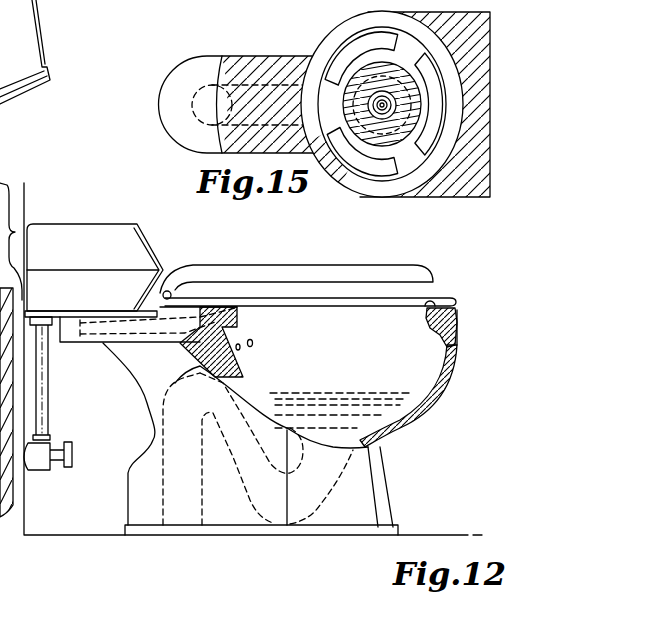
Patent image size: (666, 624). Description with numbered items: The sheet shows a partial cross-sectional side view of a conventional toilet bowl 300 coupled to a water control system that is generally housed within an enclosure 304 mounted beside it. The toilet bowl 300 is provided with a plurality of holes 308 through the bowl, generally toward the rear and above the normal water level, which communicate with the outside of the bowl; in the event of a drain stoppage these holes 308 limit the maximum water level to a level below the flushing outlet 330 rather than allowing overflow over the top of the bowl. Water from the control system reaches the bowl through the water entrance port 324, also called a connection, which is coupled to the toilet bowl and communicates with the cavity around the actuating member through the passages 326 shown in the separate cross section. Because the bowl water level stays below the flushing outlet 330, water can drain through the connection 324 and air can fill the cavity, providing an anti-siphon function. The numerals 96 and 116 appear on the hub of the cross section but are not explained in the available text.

In FIG. 12, the toilet bowl 300 is at (452, 365).
In FIG. 12, the enclosure 304 is at (100, 226).
In FIG. 12, the holes 308 is at (253, 345).
In FIG. 12, the water entrance port 324 is at (97, 333).
In FIG. 12, the flushing outlet 330 is at (238, 330).
In FIG. 15, the passages 326 is at (350, 50).
In FIG. 15, the valve body 96 is at (347, 108).
In FIG. 15, the valve stem 116 is at (393, 105).